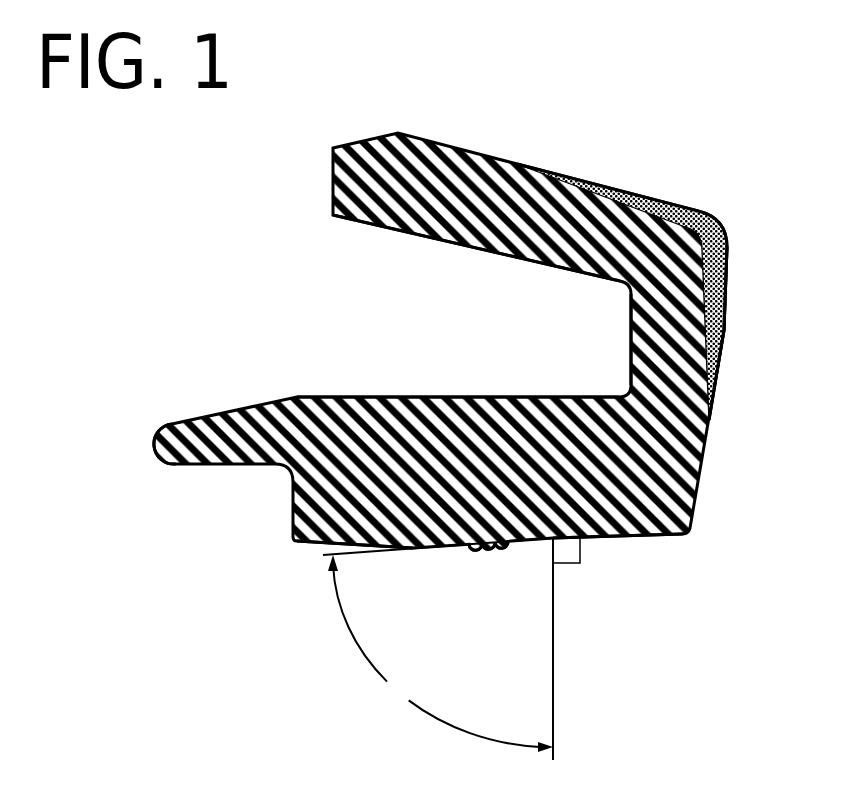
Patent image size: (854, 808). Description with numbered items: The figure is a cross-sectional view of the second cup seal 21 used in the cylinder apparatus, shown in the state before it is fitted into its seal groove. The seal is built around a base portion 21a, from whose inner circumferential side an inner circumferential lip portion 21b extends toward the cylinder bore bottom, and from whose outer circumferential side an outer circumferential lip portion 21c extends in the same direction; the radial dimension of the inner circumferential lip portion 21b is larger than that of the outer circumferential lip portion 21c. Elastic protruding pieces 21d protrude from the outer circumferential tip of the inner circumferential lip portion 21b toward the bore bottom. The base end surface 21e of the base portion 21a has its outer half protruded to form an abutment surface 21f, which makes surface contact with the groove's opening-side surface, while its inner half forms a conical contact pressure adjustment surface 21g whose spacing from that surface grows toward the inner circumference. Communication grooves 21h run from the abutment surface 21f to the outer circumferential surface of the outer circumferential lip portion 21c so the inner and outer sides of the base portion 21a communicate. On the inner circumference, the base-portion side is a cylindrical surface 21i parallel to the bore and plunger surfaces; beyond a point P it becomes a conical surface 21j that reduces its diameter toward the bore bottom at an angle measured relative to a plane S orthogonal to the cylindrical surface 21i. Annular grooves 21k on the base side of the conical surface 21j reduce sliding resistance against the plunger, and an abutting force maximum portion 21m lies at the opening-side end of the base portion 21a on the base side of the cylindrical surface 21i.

The second cup seal 21 is at (476, 63).
The base portion 21a is at (617, 334).
The inner circumferential lip portion 21b is at (403, 382).
The outer circumferential lip portion 21c is at (464, 250).
The elastic protruding pieces 21d is at (173, 432).
The base end surface 21e is at (741, 327).
The abutment surface 21f is at (729, 272).
The contact pressure adjustment surface 21g is at (715, 412).
The communication grooves 21h is at (642, 222).
The cylindrical surface 21i is at (612, 538).
The conical surface 21j is at (412, 553).
The annular grooves 21k is at (504, 544).
The abutting force maximum portion 21m is at (681, 536).
The point P is at (552, 541).
The plane S is at (554, 658).